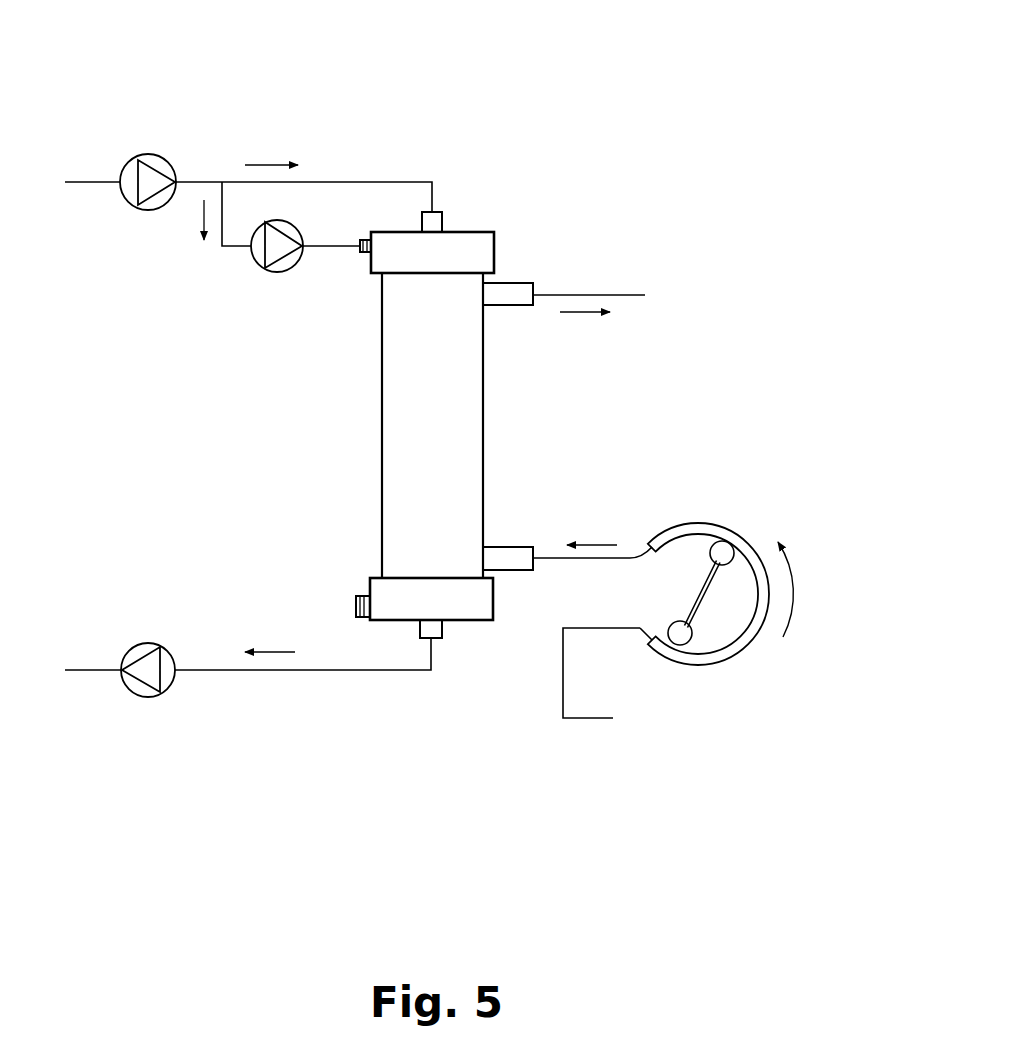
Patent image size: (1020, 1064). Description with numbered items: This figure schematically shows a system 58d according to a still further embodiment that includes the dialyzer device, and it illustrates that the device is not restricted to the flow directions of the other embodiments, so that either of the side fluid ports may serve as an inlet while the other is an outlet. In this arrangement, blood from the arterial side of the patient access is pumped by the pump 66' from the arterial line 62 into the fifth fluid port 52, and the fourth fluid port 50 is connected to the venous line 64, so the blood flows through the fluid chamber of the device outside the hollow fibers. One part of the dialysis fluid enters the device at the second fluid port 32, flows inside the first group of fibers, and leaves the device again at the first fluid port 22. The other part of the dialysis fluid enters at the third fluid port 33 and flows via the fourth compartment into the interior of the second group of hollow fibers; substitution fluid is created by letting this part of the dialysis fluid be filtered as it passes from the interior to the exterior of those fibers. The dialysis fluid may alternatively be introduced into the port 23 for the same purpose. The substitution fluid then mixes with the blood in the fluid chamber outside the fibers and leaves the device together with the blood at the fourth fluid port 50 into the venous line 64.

The system 58d is at (650, 112).
The second fluid port 32 is at (432, 225).
The third fluid port 33 is at (365, 254).
The fourth fluid port 50 is at (515, 306).
The fifth fluid port 52 is at (515, 546).
The port 23 is at (352, 606).
The first fluid port 22 is at (433, 631).
The venous line 64 is at (597, 292).
The arterial line 62 is at (563, 680).
The pump 66' is at (732, 612).